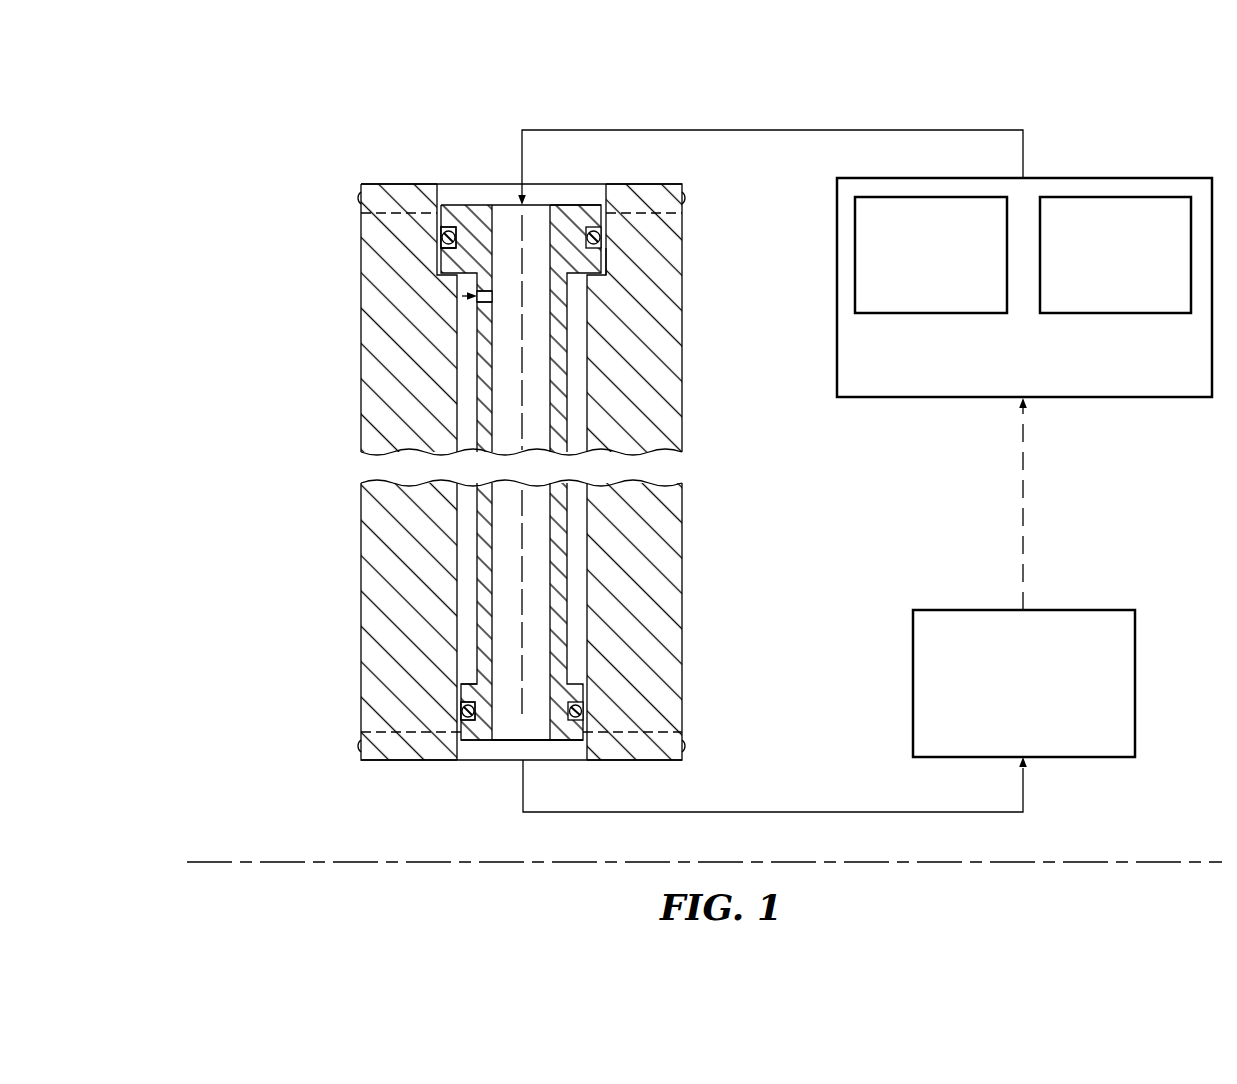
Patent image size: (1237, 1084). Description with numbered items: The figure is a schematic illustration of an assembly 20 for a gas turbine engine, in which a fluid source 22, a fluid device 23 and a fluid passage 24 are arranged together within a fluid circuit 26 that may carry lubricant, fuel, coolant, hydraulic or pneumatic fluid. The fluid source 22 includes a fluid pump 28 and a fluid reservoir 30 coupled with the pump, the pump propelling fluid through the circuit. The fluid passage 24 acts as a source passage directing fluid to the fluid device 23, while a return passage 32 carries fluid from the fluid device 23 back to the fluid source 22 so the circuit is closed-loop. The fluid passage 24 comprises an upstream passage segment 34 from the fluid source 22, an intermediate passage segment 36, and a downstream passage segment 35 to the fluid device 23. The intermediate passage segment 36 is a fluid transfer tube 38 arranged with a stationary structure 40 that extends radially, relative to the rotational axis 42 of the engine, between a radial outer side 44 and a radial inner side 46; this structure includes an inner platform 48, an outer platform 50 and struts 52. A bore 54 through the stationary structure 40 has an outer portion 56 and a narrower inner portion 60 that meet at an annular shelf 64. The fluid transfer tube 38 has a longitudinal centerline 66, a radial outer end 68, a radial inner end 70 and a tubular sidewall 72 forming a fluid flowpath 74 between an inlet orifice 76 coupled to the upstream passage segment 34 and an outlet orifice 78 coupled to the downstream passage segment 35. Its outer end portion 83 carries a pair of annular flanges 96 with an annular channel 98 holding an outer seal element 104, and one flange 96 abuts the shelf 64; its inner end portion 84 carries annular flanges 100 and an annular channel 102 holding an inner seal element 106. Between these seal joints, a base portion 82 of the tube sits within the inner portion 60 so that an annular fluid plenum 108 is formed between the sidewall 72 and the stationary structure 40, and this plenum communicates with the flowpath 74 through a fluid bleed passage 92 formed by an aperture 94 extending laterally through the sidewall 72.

The assembly 20 is at (268, 141).
The fluid source 22 is at (1024, 274).
The fluid device 23 is at (958, 610).
The fluid passage 24 is at (312, 282).
The fluid circuit 26 is at (1024, 236).
The fluid pump 28 is at (886, 313).
The fluid reservoir 30 is at (1167, 313).
The return passage 32 is at (1045, 507).
The upstream passage segment 34 is at (763, 130).
The downstream passage segment 35 is at (800, 812).
The intermediate passage segment 36 is at (606, 472).
The fluid transfer tube 38 is at (575, 352).
The stationary structure 40 is at (352, 350).
The rotational axis 42 is at (207, 862).
The radial outer side 44 is at (376, 184).
The radial inner side 46 is at (373, 760).
The inner platform 48 is at (684, 750).
The outer platform 50 is at (683, 197).
The strut 52 is at (683, 601).
The bore 54 is at (588, 398).
The outer portion 56 is at (455, 182).
The inner portion 60 is at (469, 758).
The annular shelf 64 is at (606, 266).
The longitudinal centerline 66 is at (548, 690).
The radial outer end 68 is at (585, 206).
The radial inner end 70 is at (572, 743).
The tubular sidewall 72 is at (470, 420).
The fluid flowpath 74 is at (533, 219).
The inlet orifice 76 is at (503, 207).
The outlet orifice 78 is at (541, 742).
The base portion 82 is at (462, 543).
The outer end portion 83 is at (617, 223).
The inner end portion 84 is at (598, 688).
The fluid bleed passage 92 is at (468, 296).
The aperture 94 is at (441, 328).
The annular flanges 96 is at (445, 210).
The annular channel 98 is at (450, 226).
The annular flanges 100 is at (462, 700).
The annular channel 102 is at (491, 740).
The outer seal element 104 is at (446, 257).
The inner seal element 106 is at (458, 712).
The annular fluid plenum 108 is at (592, 559).